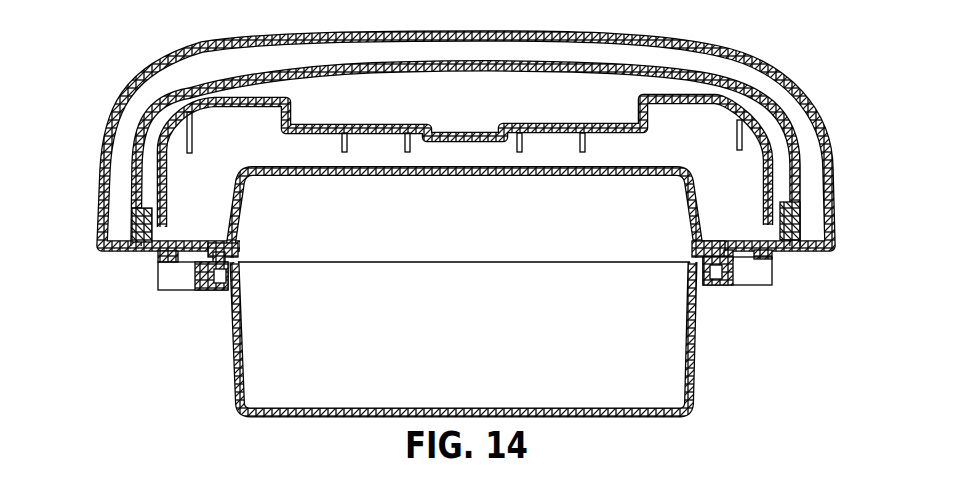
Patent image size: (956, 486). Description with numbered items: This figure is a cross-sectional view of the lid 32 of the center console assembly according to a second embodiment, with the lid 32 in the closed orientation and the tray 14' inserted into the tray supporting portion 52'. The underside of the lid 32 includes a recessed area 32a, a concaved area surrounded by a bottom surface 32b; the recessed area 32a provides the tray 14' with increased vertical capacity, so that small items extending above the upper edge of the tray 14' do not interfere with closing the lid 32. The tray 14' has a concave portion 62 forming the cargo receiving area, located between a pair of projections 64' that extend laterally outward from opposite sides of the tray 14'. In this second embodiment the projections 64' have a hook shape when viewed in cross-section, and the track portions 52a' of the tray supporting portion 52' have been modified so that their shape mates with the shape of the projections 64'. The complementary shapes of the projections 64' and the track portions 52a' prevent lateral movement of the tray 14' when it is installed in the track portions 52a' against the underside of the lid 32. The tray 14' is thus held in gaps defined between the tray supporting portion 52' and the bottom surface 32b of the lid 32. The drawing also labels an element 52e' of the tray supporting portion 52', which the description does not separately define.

The lid 32 is at (746, 47).
The recessed area 32a is at (642, 212).
The bottom surface 32b is at (184, 263).
The tray supporting portion 52' is at (445, 300).
The track portions 52a' is at (472, 294).
The sealing member tab 52e' is at (470, 225).
The projections 64' is at (468, 306).
The concave portion 62 is at (450, 355).
The tray 14' is at (503, 337).